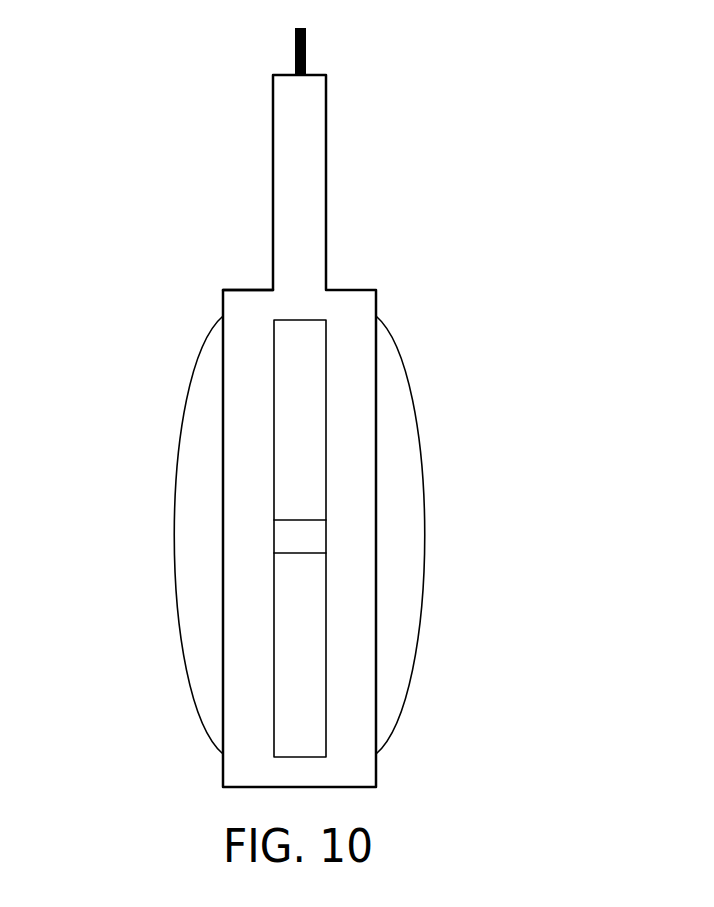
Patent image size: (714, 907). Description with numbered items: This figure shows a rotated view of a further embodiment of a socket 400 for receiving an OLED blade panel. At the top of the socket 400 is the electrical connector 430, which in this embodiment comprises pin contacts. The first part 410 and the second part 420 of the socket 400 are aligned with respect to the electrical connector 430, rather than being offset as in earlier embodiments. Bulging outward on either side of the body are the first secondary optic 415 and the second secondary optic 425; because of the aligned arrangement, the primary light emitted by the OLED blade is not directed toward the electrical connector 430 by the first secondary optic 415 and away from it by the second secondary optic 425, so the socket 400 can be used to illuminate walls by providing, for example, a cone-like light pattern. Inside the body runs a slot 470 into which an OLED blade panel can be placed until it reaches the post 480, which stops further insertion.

The socket 400 is at (114, 92).
The first part 410 is at (353, 297).
The first secondary optic 415 is at (190, 445).
The second part 420 is at (243, 297).
The second secondary optic 425 is at (410, 445).
The electrical connector 430 is at (307, 57).
The slot 470 is at (288, 713).
The post 480 is at (288, 535).